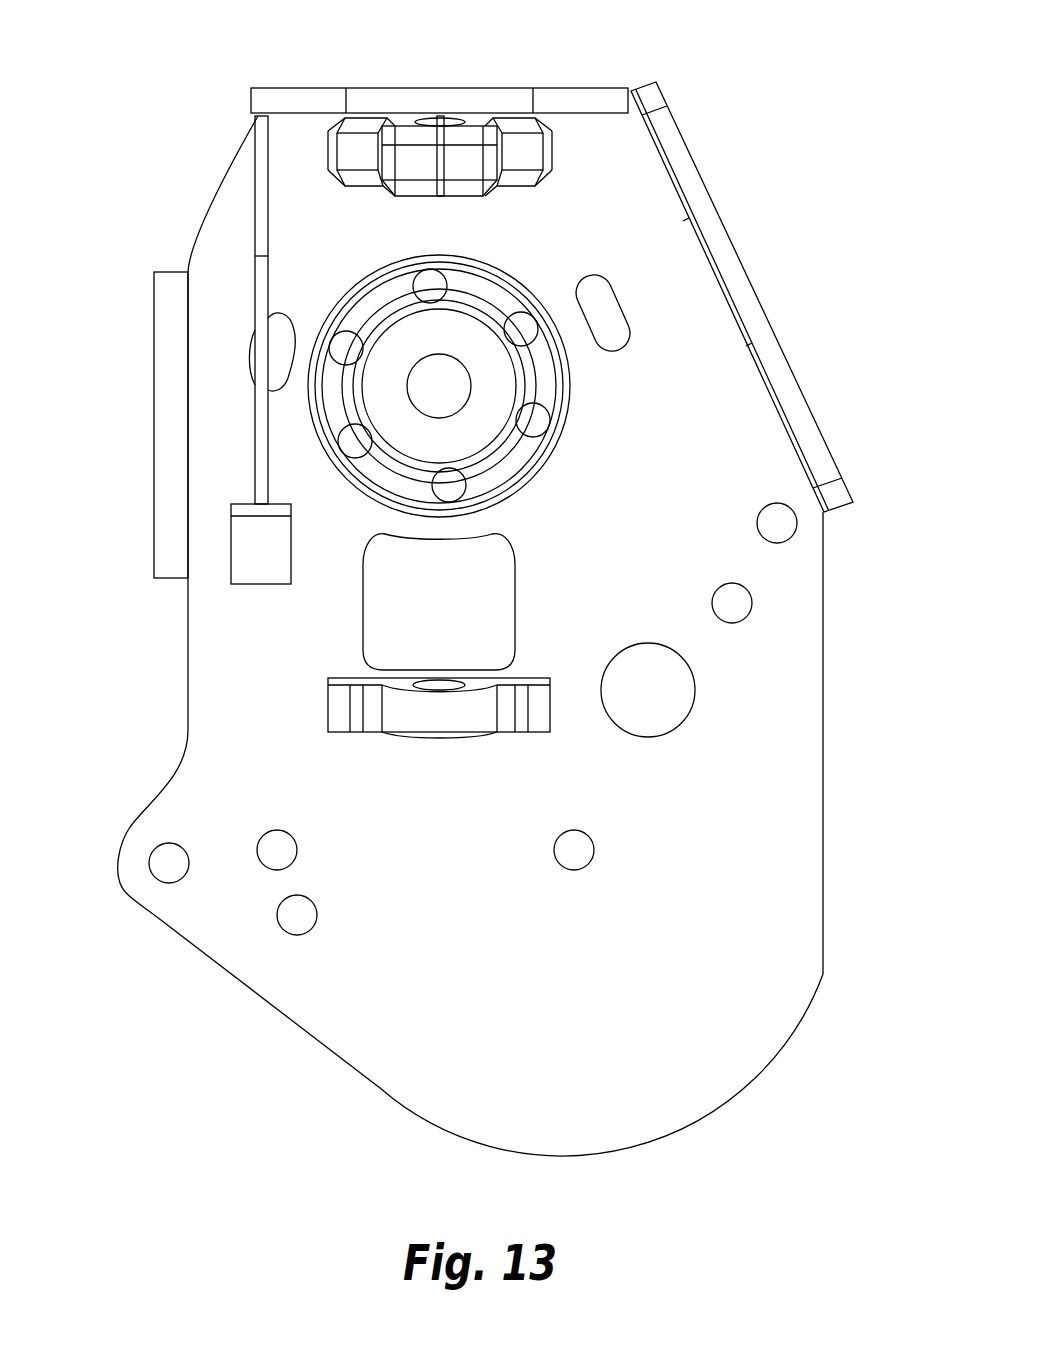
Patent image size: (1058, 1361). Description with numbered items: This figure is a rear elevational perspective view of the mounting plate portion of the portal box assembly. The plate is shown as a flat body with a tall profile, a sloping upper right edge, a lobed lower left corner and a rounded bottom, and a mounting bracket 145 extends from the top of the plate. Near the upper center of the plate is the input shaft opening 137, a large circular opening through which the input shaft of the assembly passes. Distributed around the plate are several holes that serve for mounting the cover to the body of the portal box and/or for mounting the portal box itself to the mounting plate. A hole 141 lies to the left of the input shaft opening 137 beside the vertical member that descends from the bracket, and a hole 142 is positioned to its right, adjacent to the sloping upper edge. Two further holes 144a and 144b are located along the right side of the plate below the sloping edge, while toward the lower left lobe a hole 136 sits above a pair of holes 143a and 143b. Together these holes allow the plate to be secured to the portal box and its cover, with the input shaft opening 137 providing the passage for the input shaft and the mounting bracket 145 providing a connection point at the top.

The hole 136 is at (277, 852).
The input shaft opening 137 is at (439, 386).
The hole 141 is at (284, 330).
The hole 142 is at (605, 325).
The hole 143a is at (167, 870).
The hole 143b is at (292, 922).
The hole 144a is at (778, 529).
The hole 144b is at (744, 603).
The mounting bracket 145 is at (465, 157).